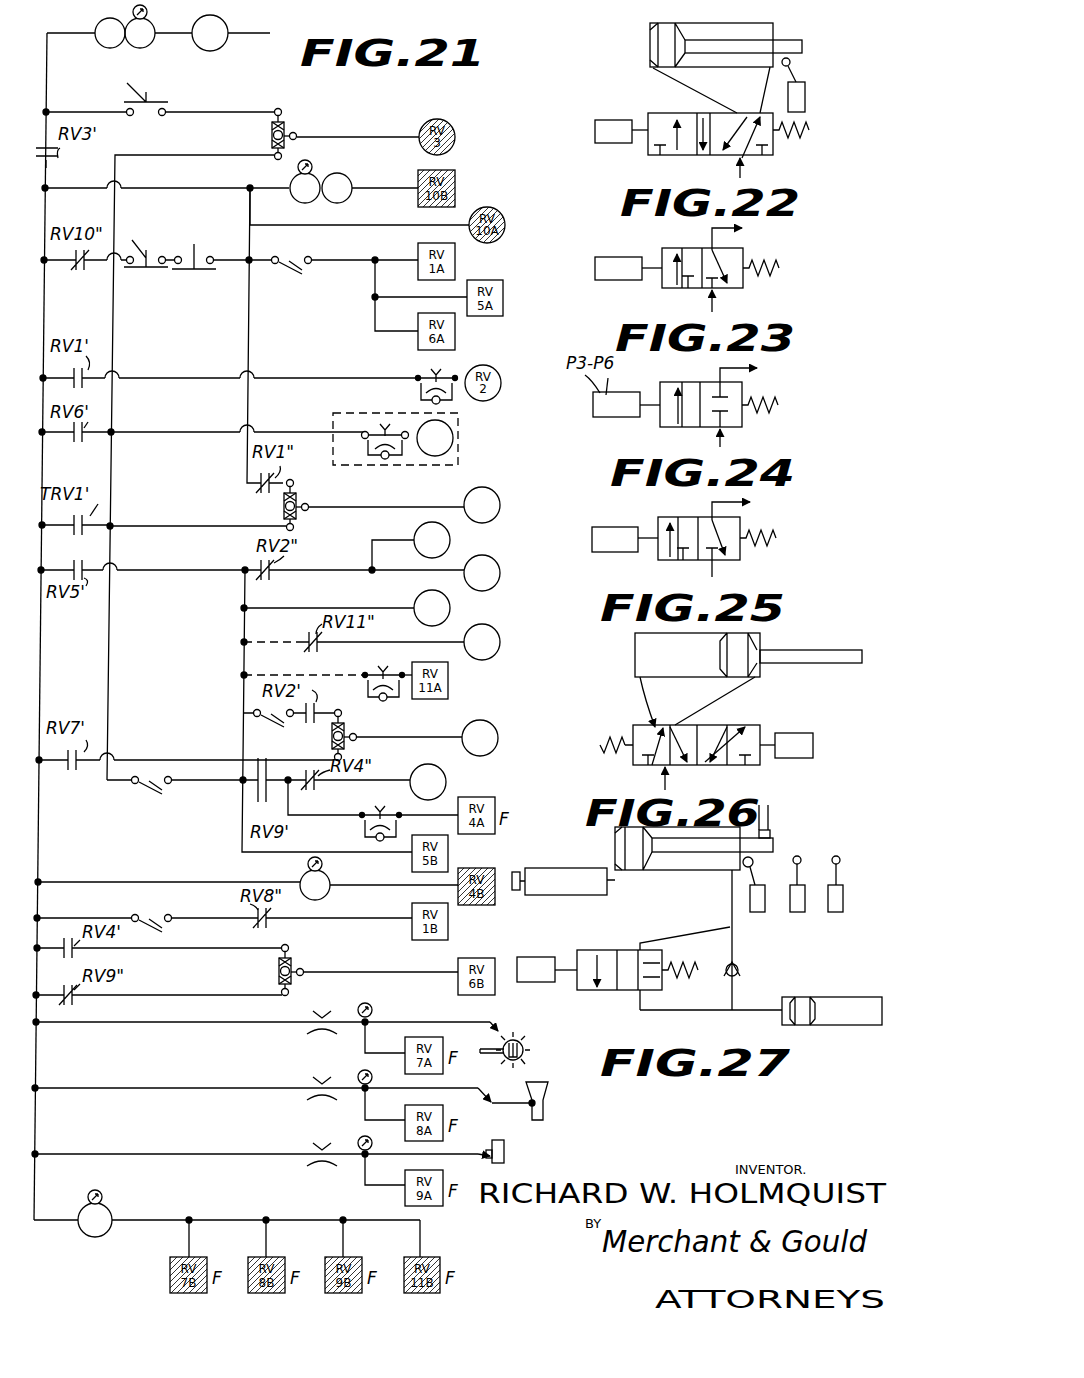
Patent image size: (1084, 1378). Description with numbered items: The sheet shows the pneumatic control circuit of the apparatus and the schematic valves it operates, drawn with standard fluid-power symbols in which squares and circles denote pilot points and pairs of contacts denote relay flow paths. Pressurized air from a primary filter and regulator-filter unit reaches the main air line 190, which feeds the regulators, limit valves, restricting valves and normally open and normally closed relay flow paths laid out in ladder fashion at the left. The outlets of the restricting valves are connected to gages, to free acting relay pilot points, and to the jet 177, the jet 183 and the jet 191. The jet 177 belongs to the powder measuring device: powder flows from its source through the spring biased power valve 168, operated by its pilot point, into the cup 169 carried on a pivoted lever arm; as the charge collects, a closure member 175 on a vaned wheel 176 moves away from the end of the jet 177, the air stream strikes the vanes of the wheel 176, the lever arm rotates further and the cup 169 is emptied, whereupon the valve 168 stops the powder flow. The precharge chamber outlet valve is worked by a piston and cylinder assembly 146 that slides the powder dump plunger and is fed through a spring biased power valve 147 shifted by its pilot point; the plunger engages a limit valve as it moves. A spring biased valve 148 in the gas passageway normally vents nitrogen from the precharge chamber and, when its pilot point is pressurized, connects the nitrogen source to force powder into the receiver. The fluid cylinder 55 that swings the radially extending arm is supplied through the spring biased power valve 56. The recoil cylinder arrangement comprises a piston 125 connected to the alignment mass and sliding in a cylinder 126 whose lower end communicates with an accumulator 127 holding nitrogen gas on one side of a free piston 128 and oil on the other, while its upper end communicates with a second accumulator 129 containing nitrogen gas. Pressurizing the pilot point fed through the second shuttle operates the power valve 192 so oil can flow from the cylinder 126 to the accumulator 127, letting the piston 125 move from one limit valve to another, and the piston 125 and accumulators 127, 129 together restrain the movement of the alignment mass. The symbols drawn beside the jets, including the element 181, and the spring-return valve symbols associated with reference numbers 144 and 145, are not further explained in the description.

In FIG. 21, the main air line 190 is at (46, 166).
In FIG. 22, the piston and cylinder assembly 146 is at (773, 25).
In FIG. 22, the power valve 147 is at (657, 113).
In FIG. 23, the power valve 168 is at (688, 248).
In FIG. 24, the spring 144 is at (741, 407).
In FIG. 24, the valve 145 is at (742, 425).
In FIG. 25, the spring biased valve 148 is at (740, 556).
In FIG. 26, the fluid cylinder 55 is at (748, 648).
In FIG. 26, the power valve 56 is at (735, 726).
In FIG. 21, the jet 191 is at (486, 1150).
In FIG. 27, the jet 191 is at (777, 810).
In FIG. 27, the piston 125 is at (638, 870).
In FIG. 27, the cylinder 126 is at (692, 870).
In FIG. 27, the second accumulator 129 is at (568, 893).
In FIG. 27, the power valve 192 is at (613, 950).
In FIG. 27, the free piston 128 is at (803, 997).
In FIG. 27, the accumulator 127 is at (851, 1027).
In FIG. 21, the jet 177 is at (500, 1031).
In FIG. 21, the closure member 175 is at (527, 1033).
In FIG. 21, the vaned wheel 176 is at (530, 1050).
In FIG. 21, the cup 169 is at (528, 1062).
In FIG. 21, the jet 183 is at (487, 1067).
In FIG. 21, the solenoid 181 is at (545, 1086).